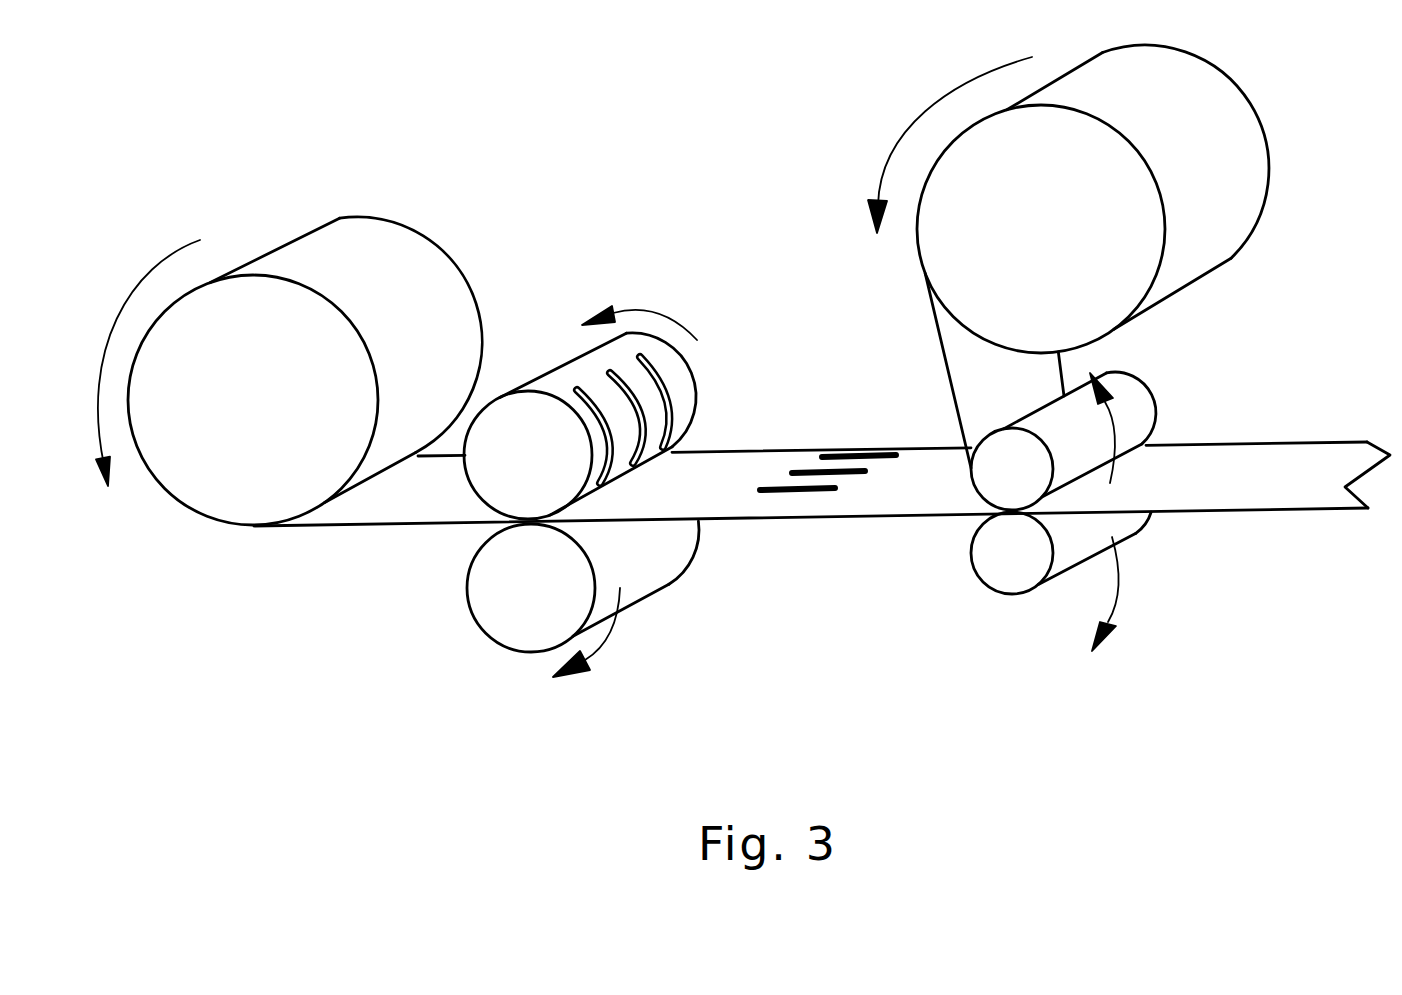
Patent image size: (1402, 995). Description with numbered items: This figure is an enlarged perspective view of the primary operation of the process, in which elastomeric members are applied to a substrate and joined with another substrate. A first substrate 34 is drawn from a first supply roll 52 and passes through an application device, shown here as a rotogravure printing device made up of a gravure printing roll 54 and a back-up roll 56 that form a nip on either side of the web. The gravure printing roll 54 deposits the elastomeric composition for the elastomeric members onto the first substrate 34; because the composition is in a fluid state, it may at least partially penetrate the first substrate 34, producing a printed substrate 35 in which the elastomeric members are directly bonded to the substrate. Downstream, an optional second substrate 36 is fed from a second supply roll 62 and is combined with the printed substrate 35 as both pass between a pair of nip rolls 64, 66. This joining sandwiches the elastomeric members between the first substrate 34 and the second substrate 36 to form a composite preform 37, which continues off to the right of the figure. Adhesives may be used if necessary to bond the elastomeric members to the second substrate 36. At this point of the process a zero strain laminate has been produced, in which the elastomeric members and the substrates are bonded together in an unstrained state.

The first substrate 34 is at (442, 503).
The printed substrate 35 is at (837, 490).
The second substrate 36 is at (1047, 377).
The composite preform 37 is at (1195, 472).
The first supply roll 52 is at (365, 267).
The gravure printing roll 54 is at (527, 390).
The back-up roll 56 is at (510, 652).
The second supply roll 62 is at (1205, 203).
The nip roll 64 is at (963, 477).
The nip roll 66 is at (1010, 597).